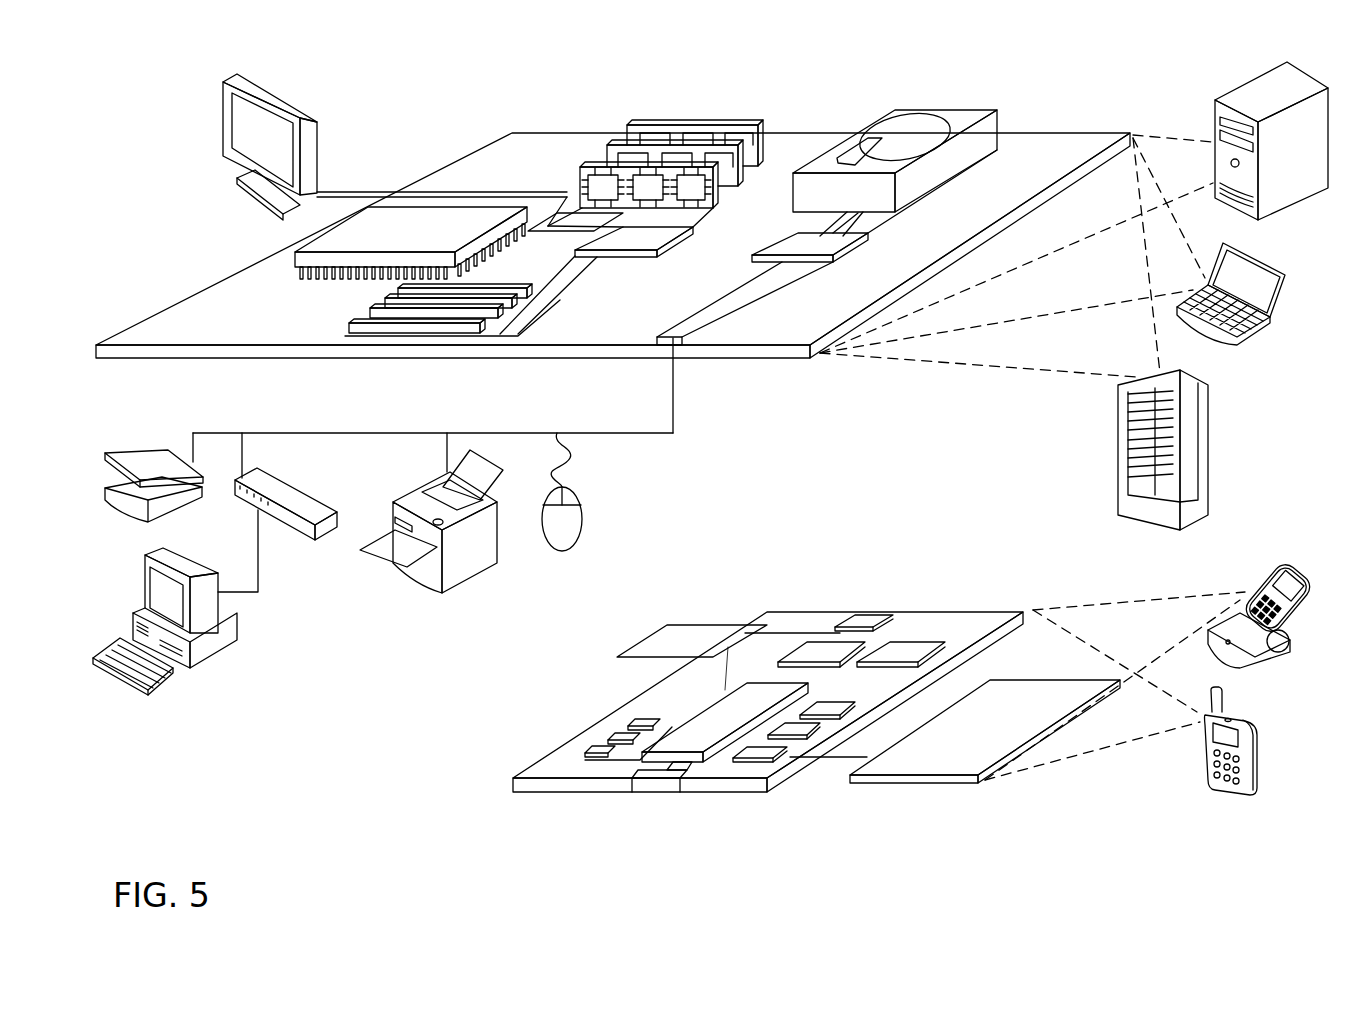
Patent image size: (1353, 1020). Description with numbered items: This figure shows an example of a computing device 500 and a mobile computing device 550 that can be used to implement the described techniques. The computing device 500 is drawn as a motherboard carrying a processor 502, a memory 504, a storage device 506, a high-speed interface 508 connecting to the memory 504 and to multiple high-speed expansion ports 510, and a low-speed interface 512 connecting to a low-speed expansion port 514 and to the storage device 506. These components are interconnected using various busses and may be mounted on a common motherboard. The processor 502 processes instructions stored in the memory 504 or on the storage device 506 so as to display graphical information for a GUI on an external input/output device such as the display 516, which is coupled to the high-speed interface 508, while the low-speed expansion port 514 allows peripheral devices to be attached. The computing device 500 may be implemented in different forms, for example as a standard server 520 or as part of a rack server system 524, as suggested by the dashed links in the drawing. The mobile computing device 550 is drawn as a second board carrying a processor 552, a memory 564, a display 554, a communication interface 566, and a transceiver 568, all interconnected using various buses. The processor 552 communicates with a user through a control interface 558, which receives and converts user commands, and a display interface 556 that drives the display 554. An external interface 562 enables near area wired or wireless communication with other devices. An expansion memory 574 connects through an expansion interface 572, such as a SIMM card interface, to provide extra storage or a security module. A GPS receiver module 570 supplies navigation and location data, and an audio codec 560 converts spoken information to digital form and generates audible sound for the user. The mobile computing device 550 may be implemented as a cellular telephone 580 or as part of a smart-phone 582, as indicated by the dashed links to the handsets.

The computing device 500 is at (426, 100).
The processor 502 is at (295, 257).
The memory 504 is at (637, 124).
The storage device 506 is at (877, 110).
The high-speed interface 508 is at (605, 237).
The high-speed expansion ports 510 is at (377, 315).
The low-speed interface 512 is at (795, 242).
The low-speed expansion port 514 is at (697, 347).
The display 516 is at (227, 80).
The standard server 520 is at (1213, 118).
The rack server system 524 is at (1117, 477).
The mobile computing device 550 is at (483, 790).
The processor 552 is at (697, 743).
The display 554 is at (943, 763).
The display interface 556 is at (768, 757).
The control interface 558 is at (800, 730).
The audio codec 560 is at (830, 705).
The external interface 562 is at (660, 778).
The memory 564 is at (608, 740).
The communication interface 566 is at (820, 648).
The transceiver 568 is at (902, 650).
The GPS receiver module 570 is at (875, 612).
The expansion interface 572 is at (728, 647).
The expansion memory 574 is at (665, 622).
The cellular telephone 580 is at (1265, 566).
The smart-phone 582 is at (1205, 758).